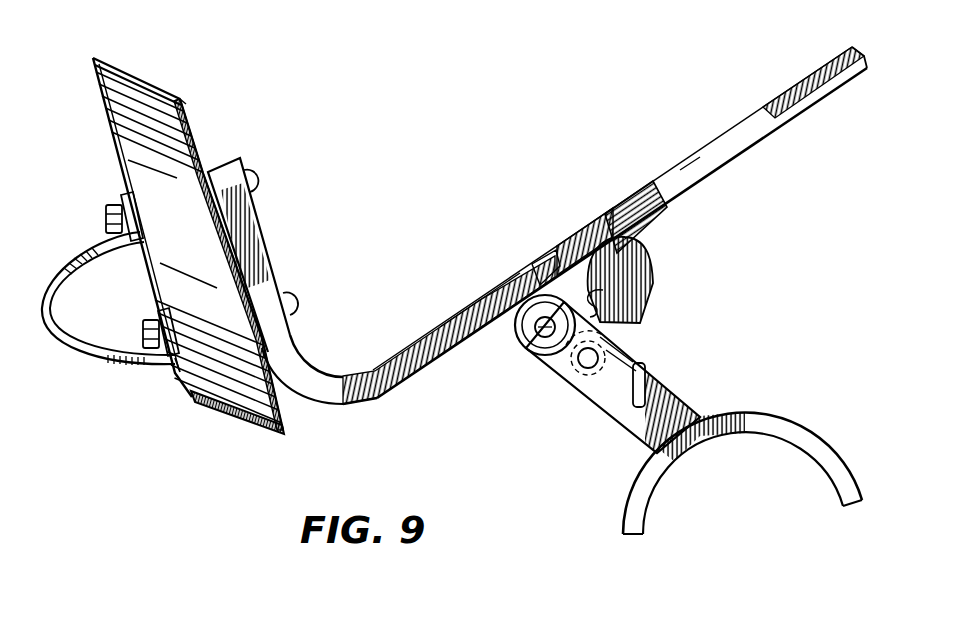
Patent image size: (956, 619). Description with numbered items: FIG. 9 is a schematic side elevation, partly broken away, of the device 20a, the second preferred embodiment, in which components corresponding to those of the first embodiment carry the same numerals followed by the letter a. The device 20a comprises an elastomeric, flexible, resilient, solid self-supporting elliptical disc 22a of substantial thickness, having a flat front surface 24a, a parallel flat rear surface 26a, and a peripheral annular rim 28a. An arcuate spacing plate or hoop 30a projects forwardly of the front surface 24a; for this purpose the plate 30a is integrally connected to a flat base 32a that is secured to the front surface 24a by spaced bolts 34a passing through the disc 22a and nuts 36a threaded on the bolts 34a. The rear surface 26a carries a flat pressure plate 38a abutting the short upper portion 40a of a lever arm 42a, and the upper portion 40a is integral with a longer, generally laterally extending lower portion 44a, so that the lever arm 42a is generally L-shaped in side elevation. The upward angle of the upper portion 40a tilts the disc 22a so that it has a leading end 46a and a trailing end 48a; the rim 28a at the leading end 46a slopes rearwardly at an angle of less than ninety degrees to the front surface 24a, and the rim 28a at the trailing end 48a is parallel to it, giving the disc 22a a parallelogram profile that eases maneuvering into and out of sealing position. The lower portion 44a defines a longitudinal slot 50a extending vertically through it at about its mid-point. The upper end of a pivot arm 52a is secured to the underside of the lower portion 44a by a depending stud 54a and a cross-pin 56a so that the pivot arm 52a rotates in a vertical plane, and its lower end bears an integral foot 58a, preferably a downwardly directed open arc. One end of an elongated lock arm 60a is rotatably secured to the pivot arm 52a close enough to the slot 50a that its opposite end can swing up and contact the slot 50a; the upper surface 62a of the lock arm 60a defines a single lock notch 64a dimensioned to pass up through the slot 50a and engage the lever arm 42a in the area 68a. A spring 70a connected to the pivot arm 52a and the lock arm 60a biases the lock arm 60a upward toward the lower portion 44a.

The device 20a is at (82, 392).
The disc 22a is at (218, 150).
The front surface 24a is at (106, 110).
The rear surface 26a is at (198, 128).
The peripheral annular rim 28a is at (182, 100).
The arcuate spacing plate 30a is at (68, 343).
The flat base 32a is at (175, 375).
The bolts 34a is at (108, 220).
The nuts 36a is at (116, 204).
The pressure plate 38a is at (292, 343).
The upper portion 40a is at (338, 402).
The lever arm 42a is at (512, 290).
The lower portion 44a is at (690, 162).
The leading end 46a is at (128, 68).
The trailing end 48a is at (213, 410).
The longitudinal slot 50a is at (612, 212).
The pivot arm 52a is at (700, 393).
The depending stud 54a is at (486, 322).
The cross-pin 56a is at (520, 342).
The foot 58a is at (807, 432).
The lock arm 60a is at (679, 252).
The upper surface 62a is at (576, 232).
The lock notch 64a is at (630, 312).
The engagement area 68a is at (558, 260).
The spring 70a is at (646, 368).